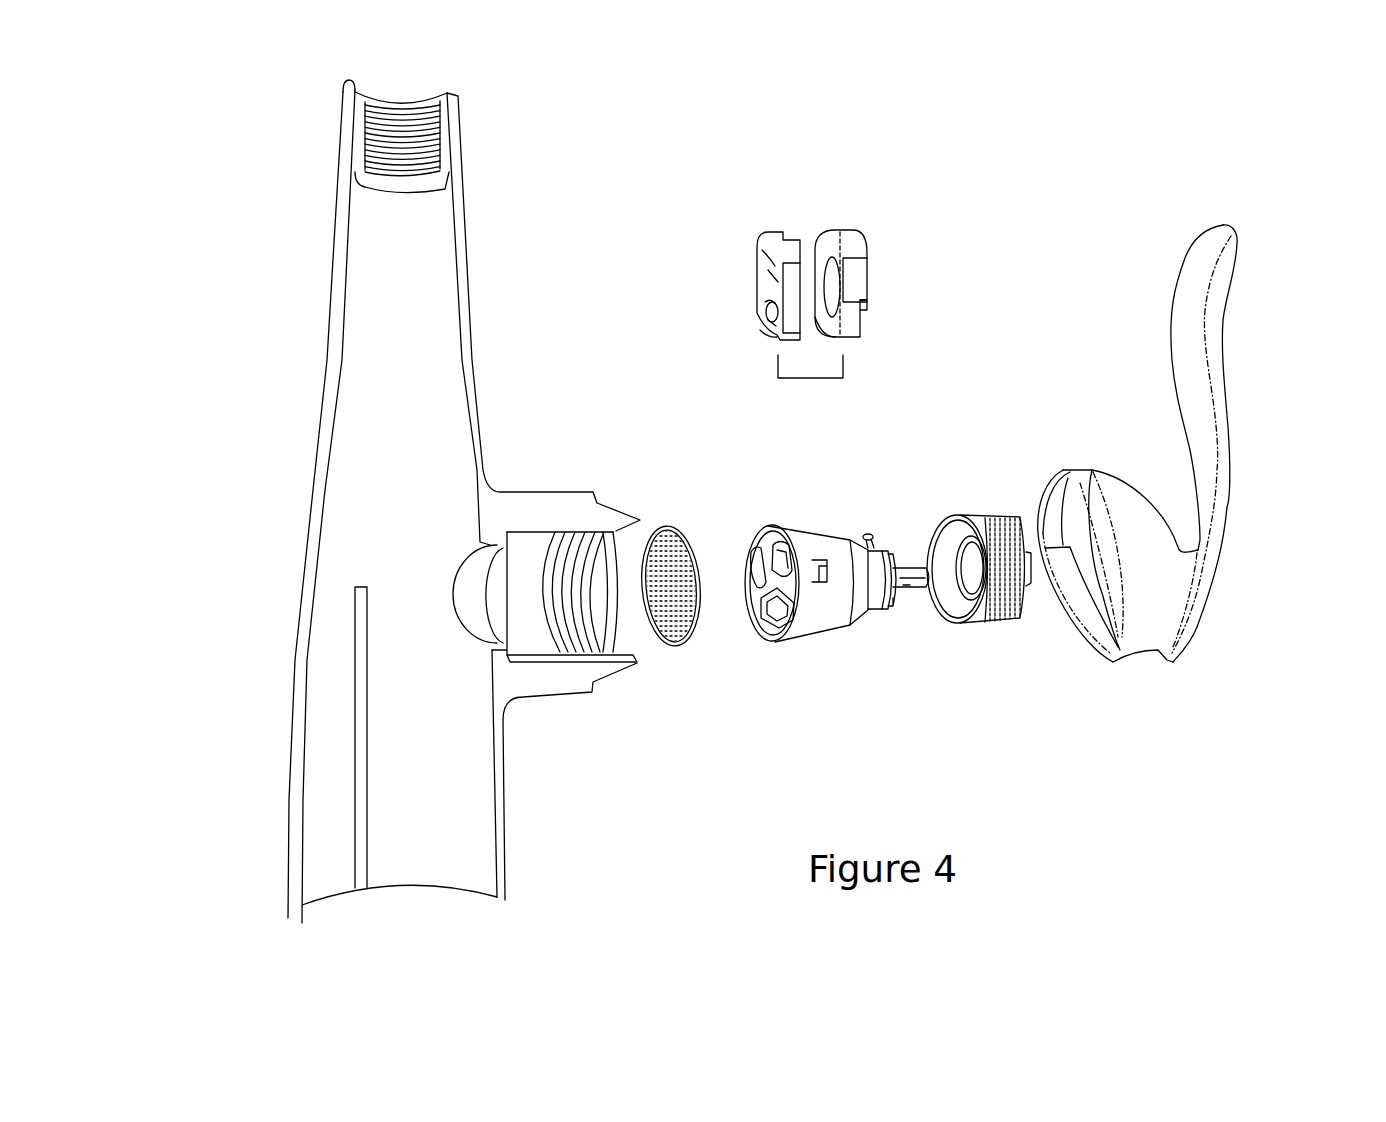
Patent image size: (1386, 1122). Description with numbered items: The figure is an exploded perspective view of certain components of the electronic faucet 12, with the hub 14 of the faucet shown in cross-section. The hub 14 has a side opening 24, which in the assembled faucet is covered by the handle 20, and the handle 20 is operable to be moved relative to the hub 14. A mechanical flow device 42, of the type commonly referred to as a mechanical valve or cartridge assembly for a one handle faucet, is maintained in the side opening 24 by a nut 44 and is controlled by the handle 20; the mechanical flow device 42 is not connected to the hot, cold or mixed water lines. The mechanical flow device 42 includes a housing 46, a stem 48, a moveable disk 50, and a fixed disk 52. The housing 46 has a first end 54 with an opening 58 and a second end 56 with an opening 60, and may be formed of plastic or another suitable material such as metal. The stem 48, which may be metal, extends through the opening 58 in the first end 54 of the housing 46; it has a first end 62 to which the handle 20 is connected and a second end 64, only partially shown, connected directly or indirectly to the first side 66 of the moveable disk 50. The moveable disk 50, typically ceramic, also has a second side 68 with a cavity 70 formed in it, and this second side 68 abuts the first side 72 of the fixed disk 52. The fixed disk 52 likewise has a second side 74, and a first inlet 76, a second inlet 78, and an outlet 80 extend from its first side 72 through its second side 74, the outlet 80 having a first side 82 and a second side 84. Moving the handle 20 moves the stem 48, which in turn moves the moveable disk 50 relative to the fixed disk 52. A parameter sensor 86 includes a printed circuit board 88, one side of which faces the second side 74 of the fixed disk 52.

The faucet 12 is at (1005, 175).
The hub 14 is at (310, 487).
The handle 20 is at (1230, 444).
The side opening 24 is at (640, 650).
The mechanical flow device 42 is at (883, 452).
The nut 44 is at (970, 513).
The housing 46 is at (820, 517).
The stem 48 is at (905, 575).
The moveable disk 50 is at (840, 228).
The fixed disk 52 is at (775, 230).
The first end 54 is at (893, 557).
The second end 56 is at (767, 525).
The opening 58 is at (895, 600).
The opening 60 is at (777, 638).
The first end 62 is at (940, 610).
The second end 64 is at (906, 585).
The first side 66 is at (858, 337).
The second side 68 is at (822, 337).
The cavity 70 is at (830, 285).
The first side 72 is at (778, 525).
The second side 74 is at (763, 340).
The first inlet 76 is at (762, 257).
The second inlet 78 is at (773, 279).
The outlet 80 is at (773, 317).
The first side 82 is at (767, 308).
The second side 84 is at (773, 323).
The parameter sensor 86 is at (667, 520).
The printed circuit board 88 is at (690, 537).